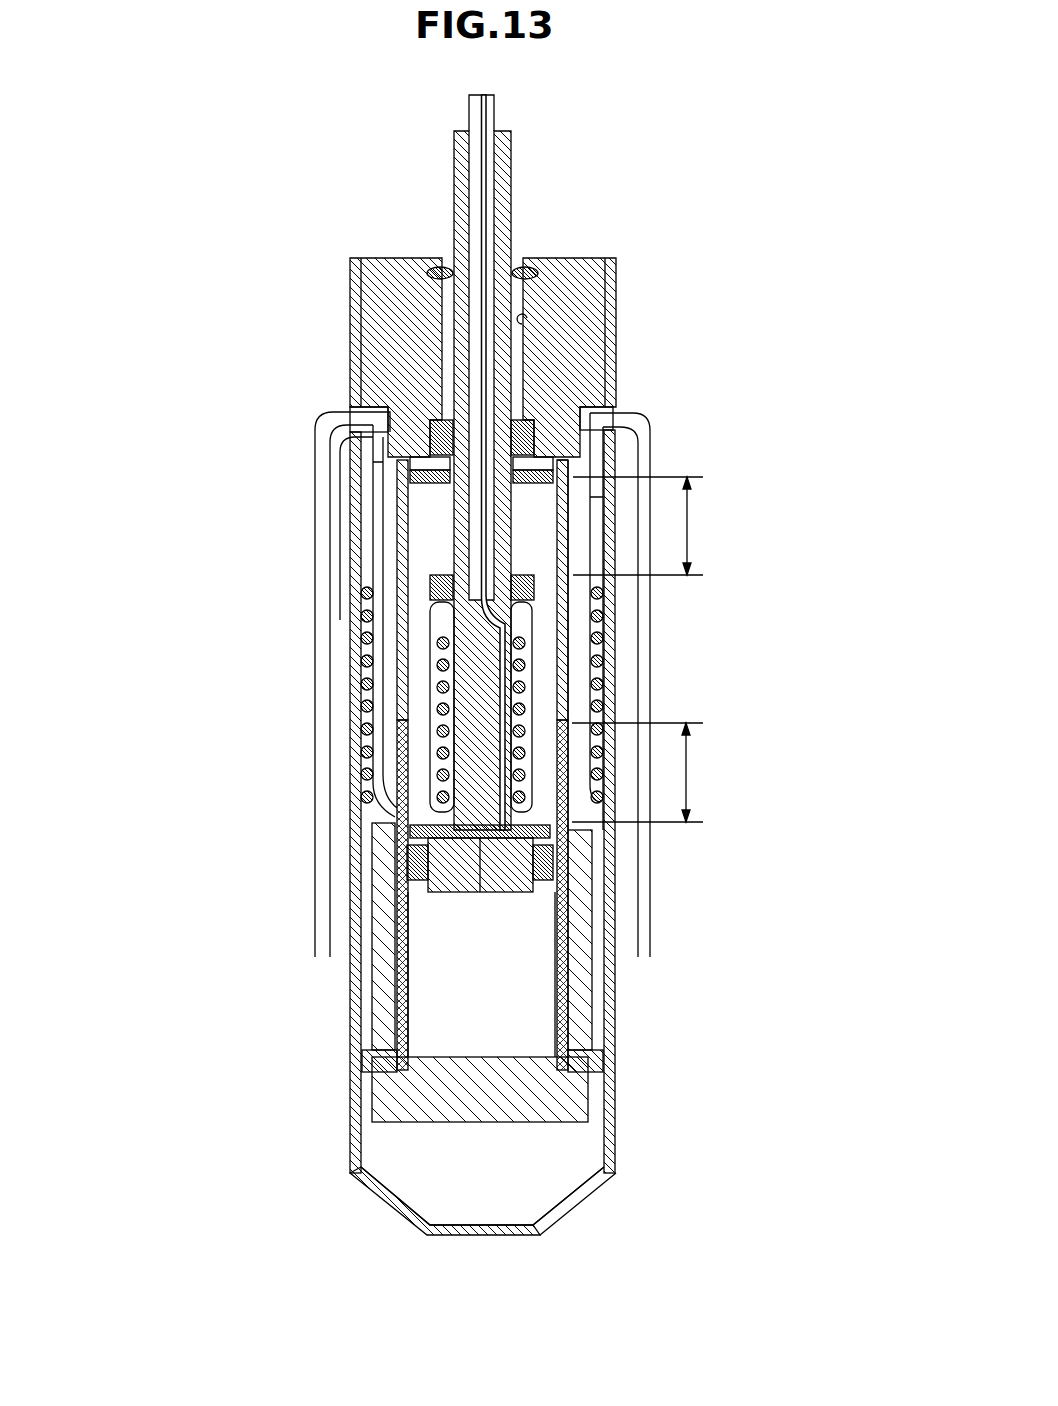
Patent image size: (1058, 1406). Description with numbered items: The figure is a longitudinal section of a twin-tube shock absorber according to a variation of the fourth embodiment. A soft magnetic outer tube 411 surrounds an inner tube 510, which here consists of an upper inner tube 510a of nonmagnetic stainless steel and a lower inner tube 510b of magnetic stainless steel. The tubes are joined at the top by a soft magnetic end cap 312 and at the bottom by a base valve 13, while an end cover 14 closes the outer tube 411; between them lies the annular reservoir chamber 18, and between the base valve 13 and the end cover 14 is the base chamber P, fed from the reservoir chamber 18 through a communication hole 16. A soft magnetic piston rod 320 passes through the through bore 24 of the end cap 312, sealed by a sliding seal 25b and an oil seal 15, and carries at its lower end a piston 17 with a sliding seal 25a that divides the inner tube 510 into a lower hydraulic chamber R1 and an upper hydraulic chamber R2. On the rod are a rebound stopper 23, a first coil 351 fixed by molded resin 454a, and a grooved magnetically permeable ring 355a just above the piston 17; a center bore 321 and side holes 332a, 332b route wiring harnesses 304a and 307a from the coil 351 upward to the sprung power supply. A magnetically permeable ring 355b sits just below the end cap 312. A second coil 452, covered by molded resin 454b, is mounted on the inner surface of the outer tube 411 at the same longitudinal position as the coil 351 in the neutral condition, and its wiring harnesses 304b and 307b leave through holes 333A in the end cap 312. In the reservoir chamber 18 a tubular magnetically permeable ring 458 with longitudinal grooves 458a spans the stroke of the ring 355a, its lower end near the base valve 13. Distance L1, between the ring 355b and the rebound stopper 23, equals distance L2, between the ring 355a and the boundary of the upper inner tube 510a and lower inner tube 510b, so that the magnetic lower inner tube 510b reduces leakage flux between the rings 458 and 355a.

The base valve 13 is at (492, 1097).
The end cover 14 is at (582, 1203).
The oil seal 15 is at (425, 276).
The communication hole 16 is at (597, 1098).
The piston 17 is at (517, 870).
The reservoir chamber 18 is at (578, 650).
The rebound stopper 23 is at (428, 588).
The through bore 24 is at (525, 323).
The sliding seal 25a is at (395, 865).
The sliding seal 25b is at (432, 443).
The wiring harness 304a is at (495, 117).
The wiring harness 304b is at (653, 923).
The wiring harness 307a is at (469, 110).
The wiring harness 307b is at (320, 927).
The end cap 312 is at (390, 322).
The piston rod 320 is at (463, 870).
The center bore 321 is at (487, 853).
The side hole 332a is at (510, 623).
The side hole 332b is at (440, 793).
The holes 333A is at (390, 430).
The coil 351 is at (437, 732).
The magnetically permeable ring 355a is at (373, 827).
The magnetically permeable ring 355b is at (430, 488).
The outer tube 411 is at (350, 997).
The coil 452 is at (367, 687).
The molded resin 454a is at (432, 807).
The molded resin 454b is at (367, 650).
The magnetically permeable ring 458 is at (577, 996).
The grooves 458a is at (598, 970).
The inner tube 510 is at (573, 608).
The upper inner tube 510a is at (562, 590).
The lower inner tube 510b is at (578, 888).
The distance L1 is at (648, 526).
The distance L2 is at (647, 772).
The base chamber P is at (410, 1160).
The lower hydraulic chamber R1 is at (533, 1033).
The upper hydraulic chamber R2 is at (417, 762).